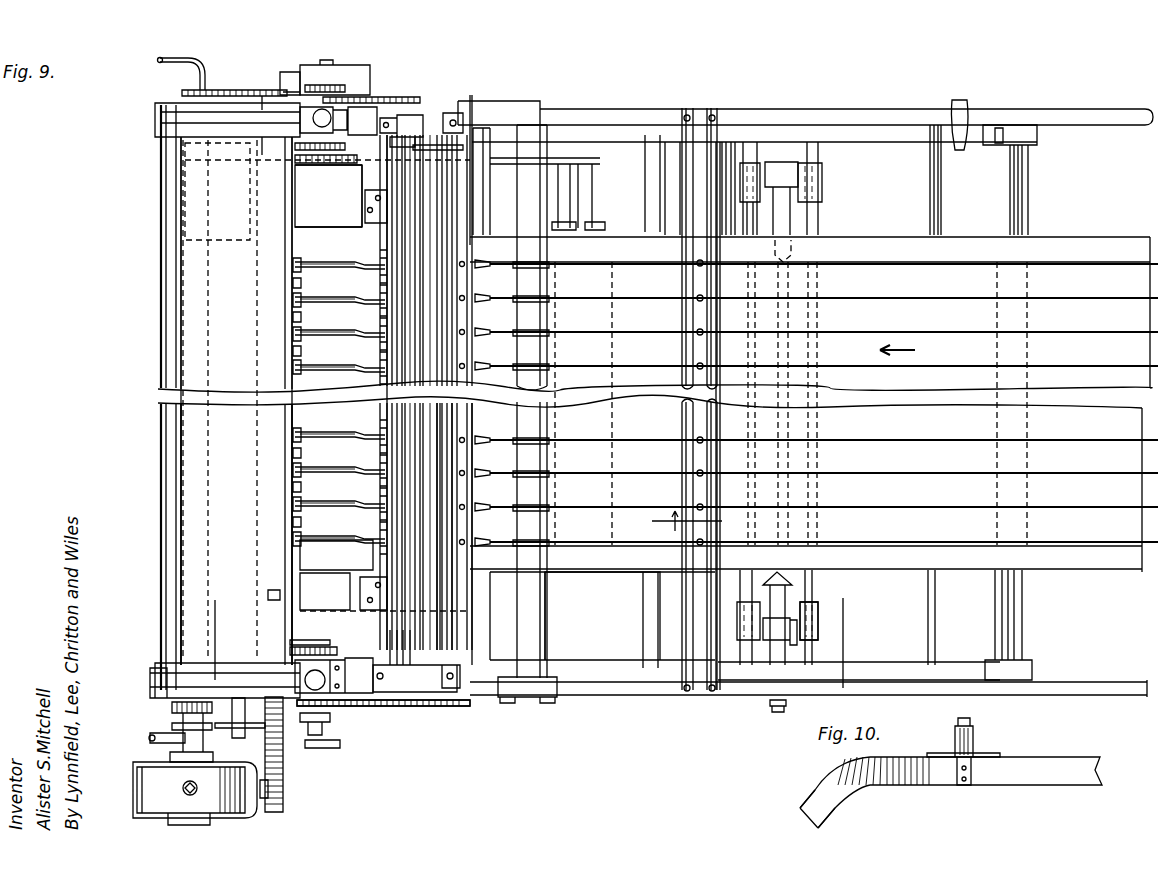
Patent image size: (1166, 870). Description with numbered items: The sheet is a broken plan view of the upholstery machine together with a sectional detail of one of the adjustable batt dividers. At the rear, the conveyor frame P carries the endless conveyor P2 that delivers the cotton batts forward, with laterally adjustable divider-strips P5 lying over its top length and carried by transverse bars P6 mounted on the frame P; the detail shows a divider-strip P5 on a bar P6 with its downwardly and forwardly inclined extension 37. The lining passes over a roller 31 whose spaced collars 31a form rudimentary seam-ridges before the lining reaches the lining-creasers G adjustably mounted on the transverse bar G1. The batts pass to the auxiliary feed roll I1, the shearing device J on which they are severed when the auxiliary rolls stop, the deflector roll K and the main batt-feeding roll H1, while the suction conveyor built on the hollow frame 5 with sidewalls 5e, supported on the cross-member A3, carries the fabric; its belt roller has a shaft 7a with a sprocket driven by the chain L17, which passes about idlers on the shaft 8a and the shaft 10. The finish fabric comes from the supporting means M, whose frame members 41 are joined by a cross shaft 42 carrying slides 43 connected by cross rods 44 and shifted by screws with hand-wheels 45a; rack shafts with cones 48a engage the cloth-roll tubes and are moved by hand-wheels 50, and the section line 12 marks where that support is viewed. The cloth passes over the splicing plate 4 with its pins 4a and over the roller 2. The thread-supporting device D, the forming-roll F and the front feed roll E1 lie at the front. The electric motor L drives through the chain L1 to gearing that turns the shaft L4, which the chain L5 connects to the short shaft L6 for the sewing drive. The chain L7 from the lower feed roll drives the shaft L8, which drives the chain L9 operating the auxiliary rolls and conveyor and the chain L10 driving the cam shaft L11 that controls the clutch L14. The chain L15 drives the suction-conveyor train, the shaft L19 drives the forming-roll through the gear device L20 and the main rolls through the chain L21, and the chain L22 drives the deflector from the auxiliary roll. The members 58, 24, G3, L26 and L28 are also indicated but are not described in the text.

In FIG. 9, the conveyor frame P is at (836, 115).
In FIG. 9, the endless conveyor P2 is at (862, 245).
In FIG. 9, the divider-strips P5 is at (945, 300).
In FIG. 10, the divider-strips P5 is at (1060, 782).
In FIG. 9, the transverse bars P6 is at (660, 283).
In FIG. 10, the transverse bars P6 is at (975, 738).
In FIG. 9, the roller 2 is at (738, 152).
In FIG. 9, the roller 31 is at (540, 135).
In FIG. 9, the flanges or collars 31a is at (545, 320).
In FIG. 9, the projecting shaft 7a is at (478, 268).
In FIG. 9, the shaft 8a is at (572, 195).
In FIG. 9, the shaft 10 is at (584, 208).
In FIG. 9, the supporting means M is at (822, 178).
In FIG. 9, the slides 43 is at (818, 190).
In FIG. 9, the cross shaft 42 is at (752, 226).
In FIG. 9, the splicing plate 4 is at (912, 222).
In FIG. 9, the pins 4a is at (958, 120).
In FIG. 9, the cross rods 44 is at (820, 405).
In FIG. 9, the transverse bar G1 is at (380, 244).
In FIG. 9, the lining-creasers G is at (352, 276).
In FIG. 9, the shearing device J is at (440, 416).
In FIG. 9, the auxiliary batt-feeding roll I1 is at (445, 598).
In FIG. 9, the electric motor L is at (195, 258).
In FIG. 9, the chain or belt L1 is at (255, 306).
In FIG. 9, the thread-supporting device D is at (195, 338).
In FIG. 9, the front feed roll E1 is at (195, 462).
In FIG. 9, the hollow rectangular frame 5 is at (1020, 615).
In FIG. 9, the dashed plate L28 is at (242, 150).
In FIG. 9, the chain L17 is at (328, 165).
In FIG. 9, the shaft L19 is at (338, 121).
In FIG. 9, the chain L15 is at (218, 88).
In FIG. 9, the pin L26 is at (258, 95).
In FIG. 9, the forming-roll F is at (290, 88).
In FIG. 9, the gear device L20 is at (358, 72).
In FIG. 9, the chain L21 is at (385, 97).
In FIG. 9, the chain L22 is at (425, 137).
In FIG. 9, the chain L7 is at (345, 600).
In FIG. 9, the chain L10 is at (305, 630).
In FIG. 9, the shaft L8 is at (331, 654).
In FIG. 9, the cam shaft L11 is at (252, 612).
In FIG. 9, the rod G3 is at (220, 665).
In FIG. 9, the main batt-feeding roll H1 is at (392, 626).
In FIG. 9, the deflector roll K is at (412, 628).
In FIG. 9, the sidewalls 5e is at (556, 578).
In FIG. 9, the cross-member A3 is at (650, 626).
In FIG. 9, the cones 48a is at (785, 578).
In FIG. 9, the block 12 is at (830, 619).
In FIG. 9, the hand-wheels 50 is at (792, 640).
In FIG. 9, the frame members 41 is at (905, 668).
In FIG. 9, the base block 58 is at (470, 660).
In FIG. 9, the hand-wheels 45a is at (775, 712).
In FIG. 9, the gear shaft 24 is at (168, 718).
In FIG. 9, the shaft L4 is at (258, 792).
In FIG. 9, the short parallel shaft L6 is at (250, 730).
In FIG. 9, the chain L5 is at (285, 758).
In FIG. 9, the chain L9 is at (375, 708).
In FIG. 9, the clutch L14 is at (338, 742).
In FIG. 10, the extensions 37 is at (826, 812).